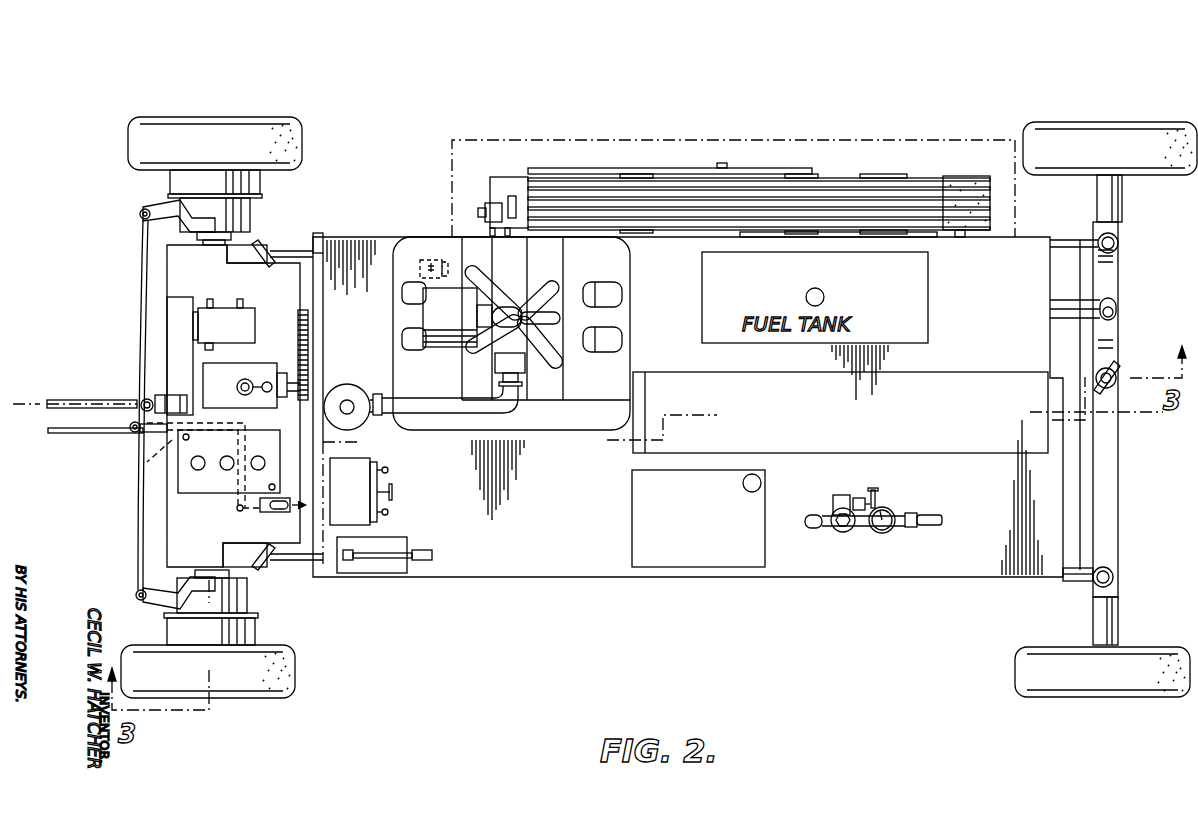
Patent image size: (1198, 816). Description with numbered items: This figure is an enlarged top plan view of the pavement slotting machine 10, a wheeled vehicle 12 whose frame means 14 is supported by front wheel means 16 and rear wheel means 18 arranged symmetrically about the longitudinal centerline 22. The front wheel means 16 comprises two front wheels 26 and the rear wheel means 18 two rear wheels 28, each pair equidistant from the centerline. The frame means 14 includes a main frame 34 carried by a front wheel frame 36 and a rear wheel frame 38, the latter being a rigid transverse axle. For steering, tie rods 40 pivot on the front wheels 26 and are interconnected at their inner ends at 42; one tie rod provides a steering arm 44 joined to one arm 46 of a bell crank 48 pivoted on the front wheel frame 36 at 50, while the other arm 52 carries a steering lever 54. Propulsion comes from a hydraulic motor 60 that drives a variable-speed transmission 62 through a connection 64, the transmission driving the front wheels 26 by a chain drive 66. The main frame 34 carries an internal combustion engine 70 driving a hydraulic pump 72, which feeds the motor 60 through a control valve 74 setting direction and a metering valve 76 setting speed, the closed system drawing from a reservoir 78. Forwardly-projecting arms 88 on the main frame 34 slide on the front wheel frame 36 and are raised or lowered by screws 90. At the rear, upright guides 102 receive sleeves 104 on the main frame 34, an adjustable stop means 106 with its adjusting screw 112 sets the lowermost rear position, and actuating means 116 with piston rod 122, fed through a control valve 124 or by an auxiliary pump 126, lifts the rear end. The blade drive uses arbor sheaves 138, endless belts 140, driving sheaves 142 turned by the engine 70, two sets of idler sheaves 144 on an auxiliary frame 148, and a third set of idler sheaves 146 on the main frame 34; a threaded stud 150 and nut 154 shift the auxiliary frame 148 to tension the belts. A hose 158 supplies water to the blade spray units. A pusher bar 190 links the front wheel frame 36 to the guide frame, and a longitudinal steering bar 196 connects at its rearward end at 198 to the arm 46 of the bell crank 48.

The pavement slotting machine 10 is at (755, 90).
The wheeled vehicle 12 is at (733, 166).
The frame means 14 is at (556, 579).
The front wheel means 16 is at (302, 117).
The rear wheel means 18 is at (1100, 118).
The longitudinal centerline 22 is at (38, 404).
The front wheels 26 is at (235, 128).
The rear wheels 28 is at (1148, 125).
The main frame 34 is at (598, 578).
The front wheel frame 36 is at (178, 282).
The rear wheel frame 38 is at (1117, 535).
The tie rods 40 is at (147, 355).
The pivotal interconnection of tie rods 42 is at (138, 402).
The steering arm 44 is at (130, 426).
The arm of bell crank 46 is at (162, 430).
The bell crank 48 is at (234, 476).
The bell crank pivot 50 is at (248, 428).
The other arm of bell crank 52 is at (237, 508).
The steering lever 54 is at (268, 514).
The hydraulic motor 60 is at (243, 319).
The variable-speed transmission 62 is at (240, 370).
The connection 64 is at (178, 328).
The chain drive 66 is at (300, 336).
The internal combustion engine 70 is at (635, 274).
The hydraulic pump 72 is at (430, 260).
The control valve 74 is at (390, 513).
The metering valve 76 is at (396, 493).
The reservoir 78 is at (758, 555).
The forwardly-projecting arms 88 is at (292, 252).
The screws 90 is at (258, 244).
The upright guides 102 is at (1120, 244).
The sleeves 104 is at (1118, 240).
The adjustable stop means 106 is at (1120, 375).
The adjusting screw 112 is at (1120, 366).
The actuating means 116 is at (1118, 302).
The piston rod 122 is at (1116, 313).
The control valve 124 is at (390, 471).
The auxiliary pump 126 is at (395, 545).
The sheaves 138 is at (952, 178).
The endless belts 140 is at (838, 205).
The driving sheaves 142 is at (508, 176).
The idler sheaves 144 is at (652, 176).
The idler sheaves 146 is at (890, 176).
The auxiliary frame 148 is at (748, 168).
The threaded stud 150 is at (516, 210).
The nut 154 is at (490, 212).
The hose 158 is at (932, 516).
The pusher bar 190 is at (62, 400).
The steering bar 196 is at (85, 433).
The steering bar connection 198 is at (147, 462).